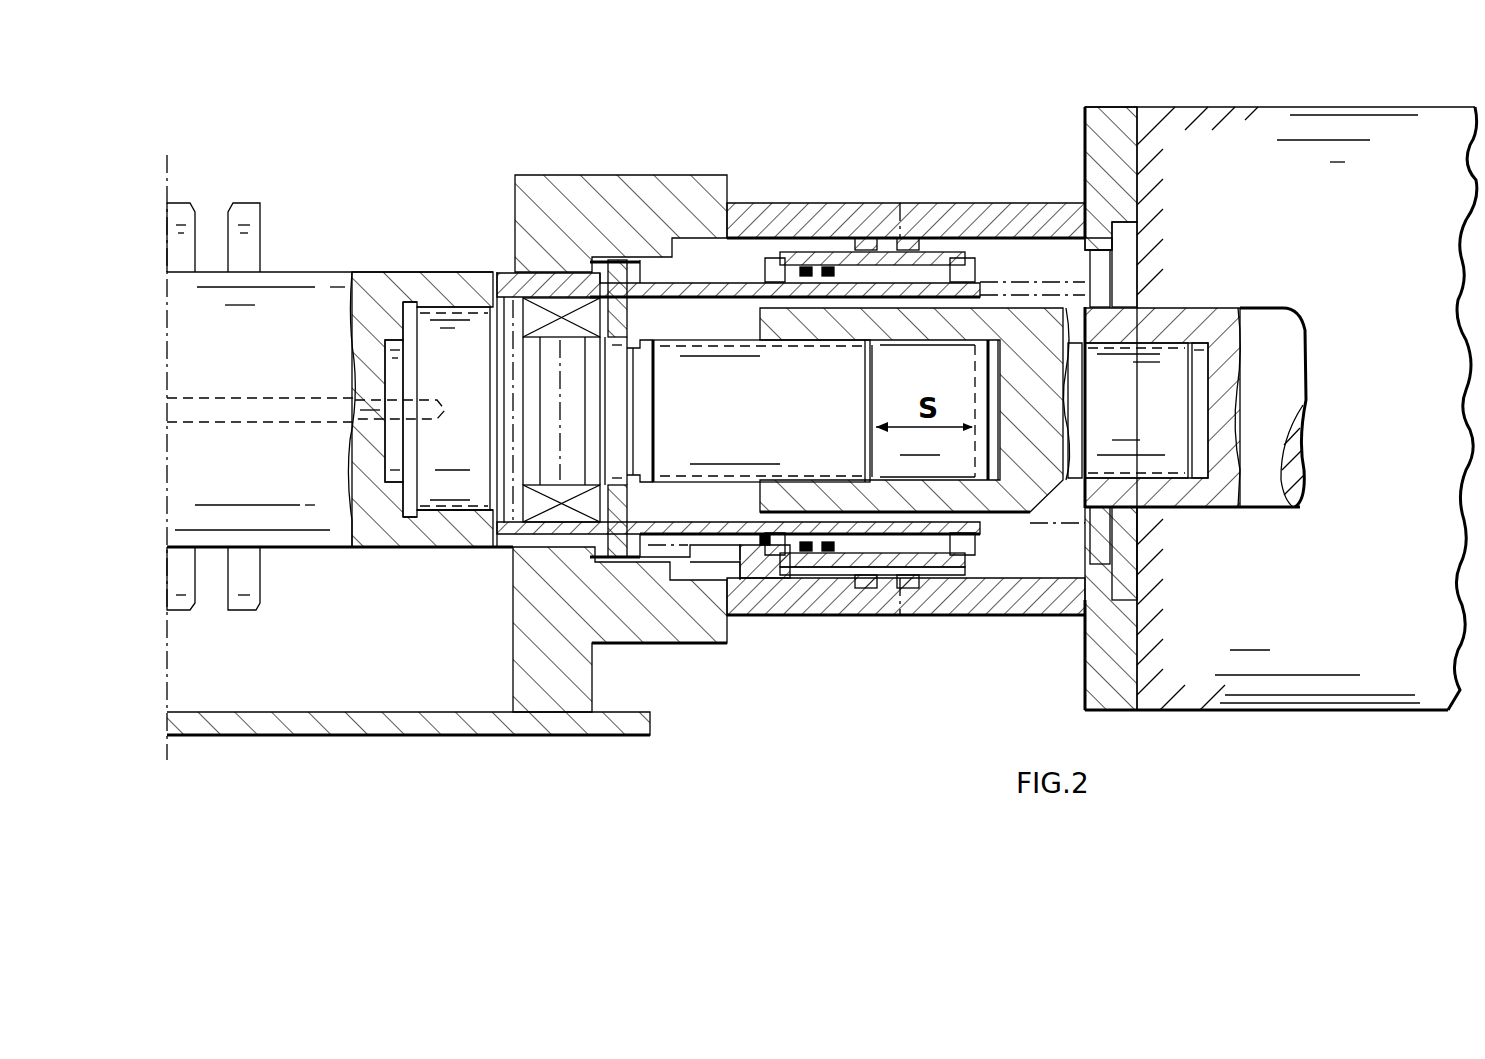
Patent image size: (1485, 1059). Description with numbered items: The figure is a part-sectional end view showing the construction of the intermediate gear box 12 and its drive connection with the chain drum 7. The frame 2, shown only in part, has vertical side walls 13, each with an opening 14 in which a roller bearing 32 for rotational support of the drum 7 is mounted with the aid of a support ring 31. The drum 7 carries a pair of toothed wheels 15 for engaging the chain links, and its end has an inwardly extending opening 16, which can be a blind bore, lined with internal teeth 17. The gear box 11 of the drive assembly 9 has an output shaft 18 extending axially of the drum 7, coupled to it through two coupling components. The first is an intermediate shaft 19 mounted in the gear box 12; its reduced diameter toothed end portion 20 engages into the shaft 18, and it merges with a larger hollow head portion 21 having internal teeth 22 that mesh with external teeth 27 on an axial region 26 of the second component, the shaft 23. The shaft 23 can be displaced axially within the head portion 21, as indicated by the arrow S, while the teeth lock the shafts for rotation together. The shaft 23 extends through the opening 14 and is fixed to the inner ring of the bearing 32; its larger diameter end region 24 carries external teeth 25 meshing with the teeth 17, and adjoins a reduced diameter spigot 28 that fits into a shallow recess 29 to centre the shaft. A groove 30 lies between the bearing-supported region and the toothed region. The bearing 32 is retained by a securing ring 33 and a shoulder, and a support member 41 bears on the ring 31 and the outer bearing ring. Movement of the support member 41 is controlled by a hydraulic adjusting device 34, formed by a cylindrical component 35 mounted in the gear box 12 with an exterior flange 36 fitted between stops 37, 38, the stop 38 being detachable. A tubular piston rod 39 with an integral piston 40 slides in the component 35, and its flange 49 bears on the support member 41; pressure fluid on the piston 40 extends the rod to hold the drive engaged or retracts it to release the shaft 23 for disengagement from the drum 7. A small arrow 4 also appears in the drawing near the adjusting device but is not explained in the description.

The frame 2 is at (285, 715).
The pressure direction 4 is at (777, 566).
The chain drum 7 is at (255, 525).
The drive assembly 9 is at (1295, 718).
The gear box 11 is at (1350, 120).
The intermediate gear box 12 is at (973, 205).
The side wall 13 is at (525, 650).
The opening 14 is at (545, 560).
The toothed wheels 15 is at (253, 245).
The openings 16 is at (440, 512).
The internal teeth 17 is at (452, 312).
The output shaft 18 is at (1280, 360).
The intermediate shaft 19 is at (1110, 495).
The toothed end portion 20 is at (1113, 397).
The hollow head portion 21 is at (985, 320).
The internal teeth 22 is at (937, 330).
The shaft 23 is at (737, 365).
The end region 24 is at (432, 438).
The external teeth 25 is at (430, 305).
The axial region 26 is at (848, 378).
The external teeth 27 is at (710, 345).
The spigot 28 is at (400, 358).
The shallow recess 29 is at (390, 390).
The groove 30 is at (640, 487).
The support ring 31 is at (520, 300).
The bearing 32 is at (568, 300).
The securing ring 33 is at (627, 320).
The hydraulic adjusting device 34 is at (772, 578).
The cylindrical component 35 is at (740, 552).
The exterior flange 36 is at (885, 565).
The stop 37 is at (862, 592).
The stop 38 is at (905, 592).
The tubular piston rod 39 is at (705, 555).
The piston 40 is at (808, 555).
The support member 41 is at (640, 300).
The flange 49 is at (665, 300).